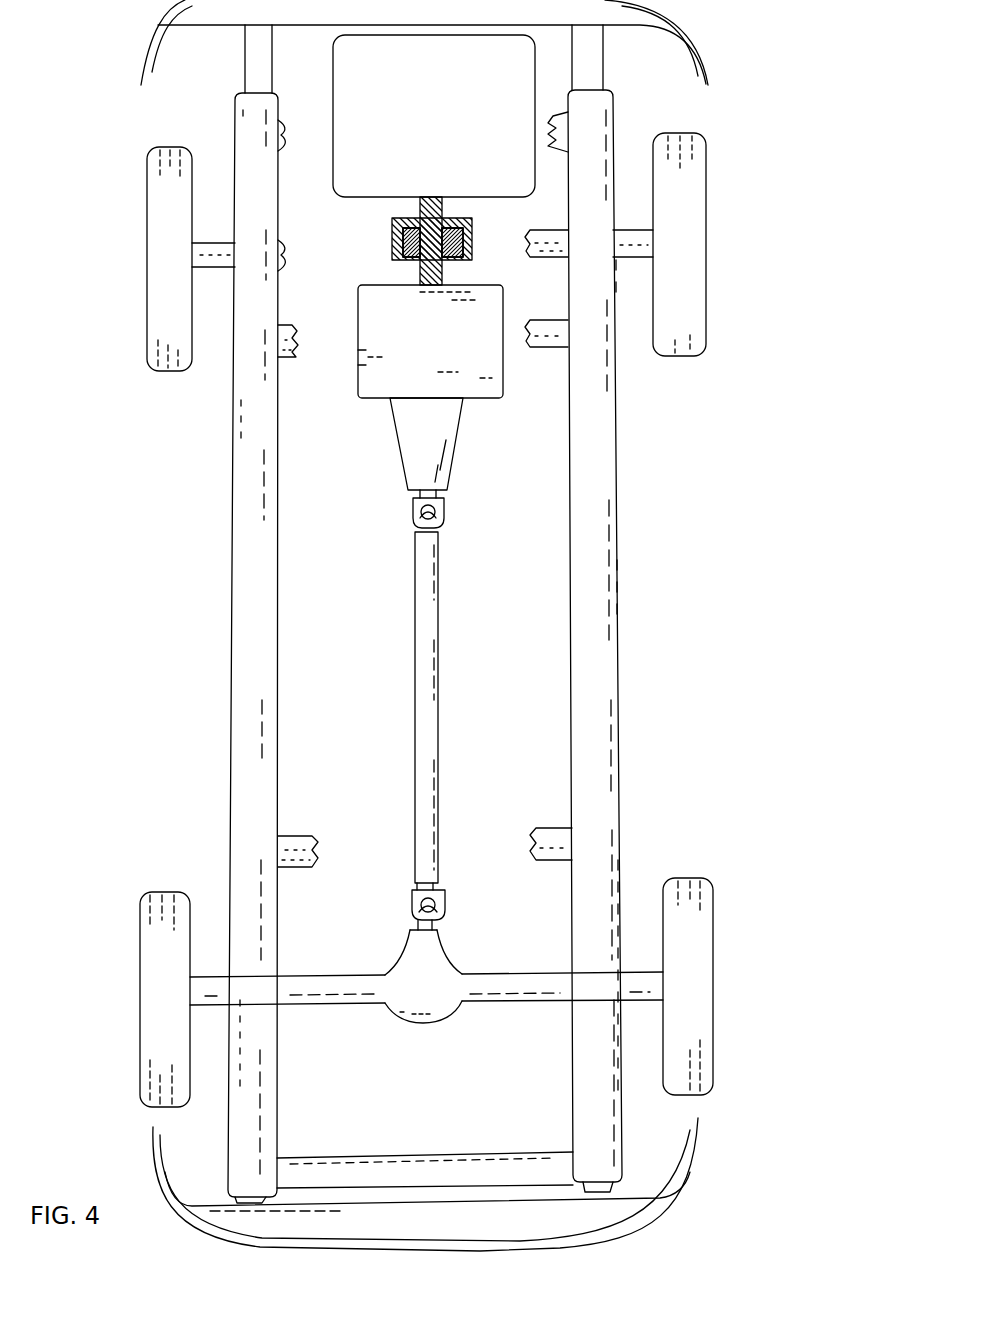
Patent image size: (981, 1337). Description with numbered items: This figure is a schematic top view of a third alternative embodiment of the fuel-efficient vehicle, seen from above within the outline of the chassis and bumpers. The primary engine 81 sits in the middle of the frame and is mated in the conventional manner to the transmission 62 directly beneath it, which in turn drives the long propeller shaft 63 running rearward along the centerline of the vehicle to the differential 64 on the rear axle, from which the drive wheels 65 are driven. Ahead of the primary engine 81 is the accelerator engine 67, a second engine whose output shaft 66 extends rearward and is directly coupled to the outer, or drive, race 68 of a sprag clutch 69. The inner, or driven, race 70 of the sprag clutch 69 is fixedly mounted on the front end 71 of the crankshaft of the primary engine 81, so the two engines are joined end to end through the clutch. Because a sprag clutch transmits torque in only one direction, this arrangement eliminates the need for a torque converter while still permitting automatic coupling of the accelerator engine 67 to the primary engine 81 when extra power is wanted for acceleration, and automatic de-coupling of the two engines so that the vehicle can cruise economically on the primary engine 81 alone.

The transmission 62 is at (447, 445).
The propeller shaft 63 is at (438, 702).
The differential 64 is at (432, 988).
The drive wheels 65 is at (140, 948).
The output shaft 66 is at (443, 200).
The accelerator engine 67 is at (452, 132).
The outer race 68 is at (405, 238).
The sprag clutch 69 is at (481, 252).
The inner race 70 is at (448, 267).
The front end 71 is at (420, 275).
The primary engine 81 is at (438, 352).